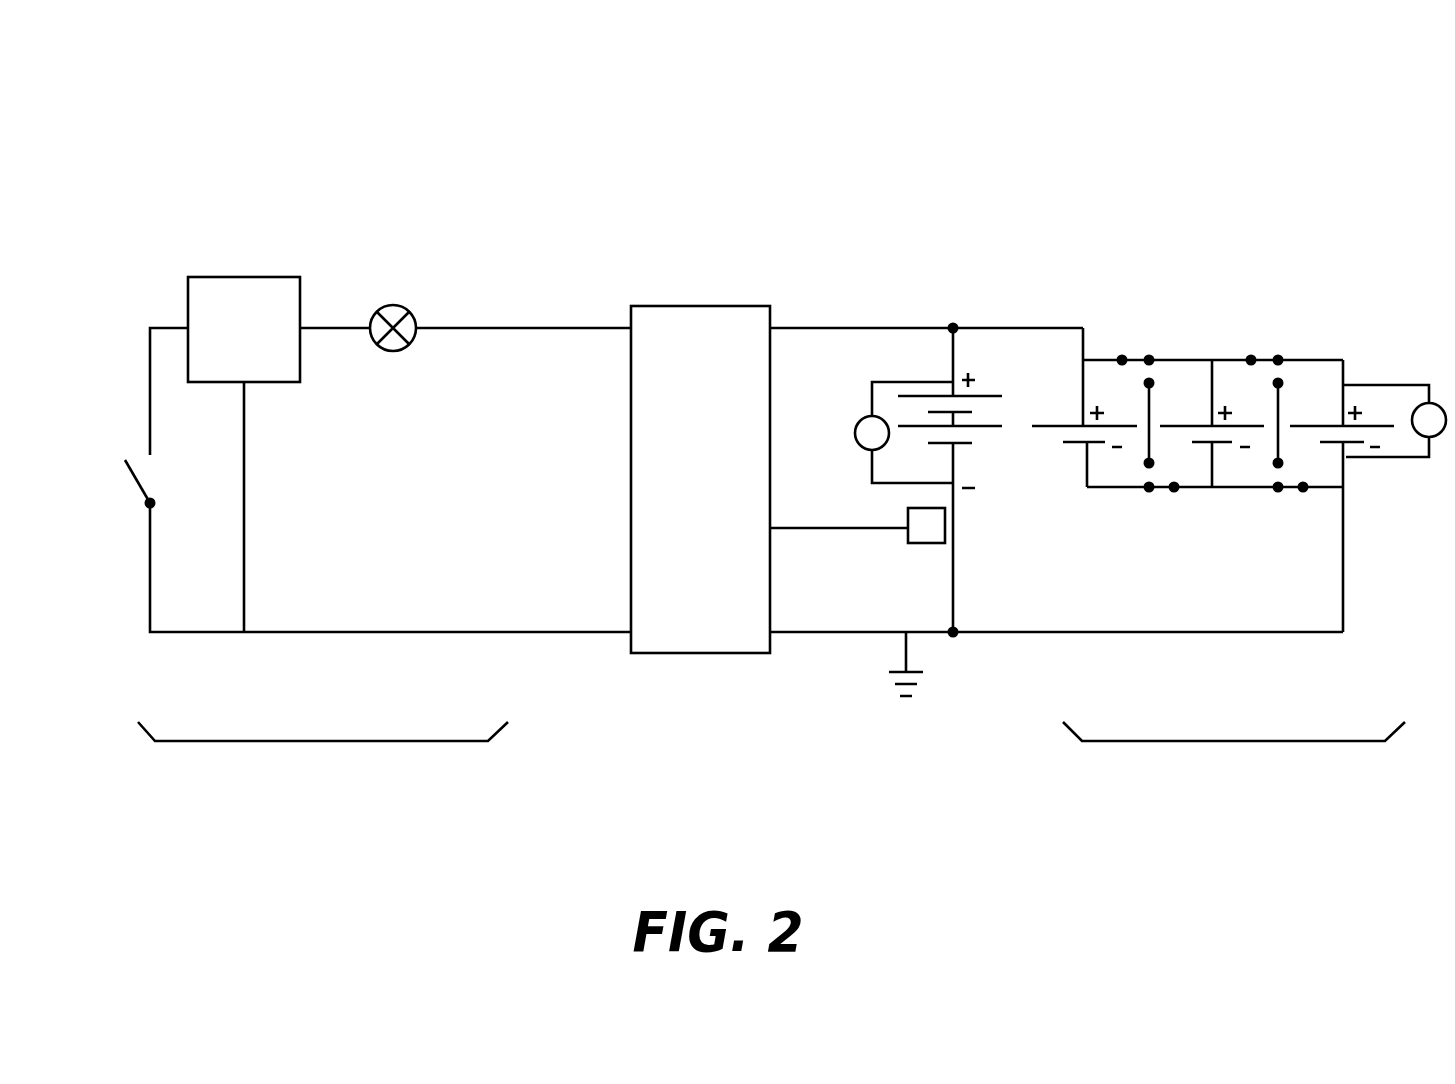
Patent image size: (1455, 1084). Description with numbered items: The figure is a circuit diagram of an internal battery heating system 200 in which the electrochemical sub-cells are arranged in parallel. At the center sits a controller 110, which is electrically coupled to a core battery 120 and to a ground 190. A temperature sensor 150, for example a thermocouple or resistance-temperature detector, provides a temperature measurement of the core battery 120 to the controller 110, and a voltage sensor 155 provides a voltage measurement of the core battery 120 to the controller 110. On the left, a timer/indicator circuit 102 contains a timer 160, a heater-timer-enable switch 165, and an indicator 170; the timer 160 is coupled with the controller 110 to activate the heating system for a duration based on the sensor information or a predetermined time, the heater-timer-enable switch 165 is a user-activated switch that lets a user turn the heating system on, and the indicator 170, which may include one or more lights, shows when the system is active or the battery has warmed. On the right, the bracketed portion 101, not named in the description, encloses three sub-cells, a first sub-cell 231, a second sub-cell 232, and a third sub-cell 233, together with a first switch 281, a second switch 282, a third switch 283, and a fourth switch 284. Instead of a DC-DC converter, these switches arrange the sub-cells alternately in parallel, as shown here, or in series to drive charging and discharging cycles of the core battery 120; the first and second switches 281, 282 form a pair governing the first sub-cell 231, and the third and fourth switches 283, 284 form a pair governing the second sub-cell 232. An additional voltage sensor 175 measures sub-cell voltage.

The internal battery heating system 200 is at (170, 128).
The battery pack side 101 is at (1240, 741).
The timer/indicator circuit 102 is at (304, 741).
The controller 110 is at (700, 479).
The core battery 120 is at (1017, 442).
The temperature sensor 150 is at (930, 546).
The voltage sensor 155 is at (855, 437).
The timer 160 is at (244, 329).
The heater-timer-enable switch 165 is at (130, 509).
The indicator 170 is at (395, 304).
The additional voltage sensor 175 is at (1432, 401).
The ground 190 is at (880, 688).
The first sub-cell 231 is at (1100, 380).
The second sub-cell 232 is at (1225, 380).
The third sub-cell 233 is at (1359, 471).
The first switch 281 is at (1142, 343).
The second switch 282 is at (1146, 500).
The third switch 283 is at (1277, 343).
The fourth switch 284 is at (1275, 500).